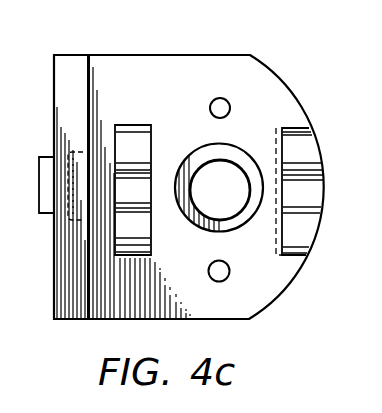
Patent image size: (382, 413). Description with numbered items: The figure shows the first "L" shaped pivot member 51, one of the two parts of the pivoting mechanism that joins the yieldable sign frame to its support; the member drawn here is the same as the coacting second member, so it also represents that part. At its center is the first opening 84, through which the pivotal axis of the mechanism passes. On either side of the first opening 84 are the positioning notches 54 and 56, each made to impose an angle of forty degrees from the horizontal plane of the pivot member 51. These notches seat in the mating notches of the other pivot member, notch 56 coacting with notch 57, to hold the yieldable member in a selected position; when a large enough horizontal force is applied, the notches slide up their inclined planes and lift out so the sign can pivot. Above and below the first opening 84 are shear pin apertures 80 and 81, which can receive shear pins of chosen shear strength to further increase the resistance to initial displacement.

The first "L" shaped pivot member 51 is at (282, 81).
The positioning notch 54 is at (315, 190).
The positioning notch 56 is at (135, 138).
The positioning notch 57 is at (370, 238).
The shear pin aperture 80 is at (228, 98).
The shear pin aperture 81 is at (228, 278).
The first opening 84 is at (227, 163).